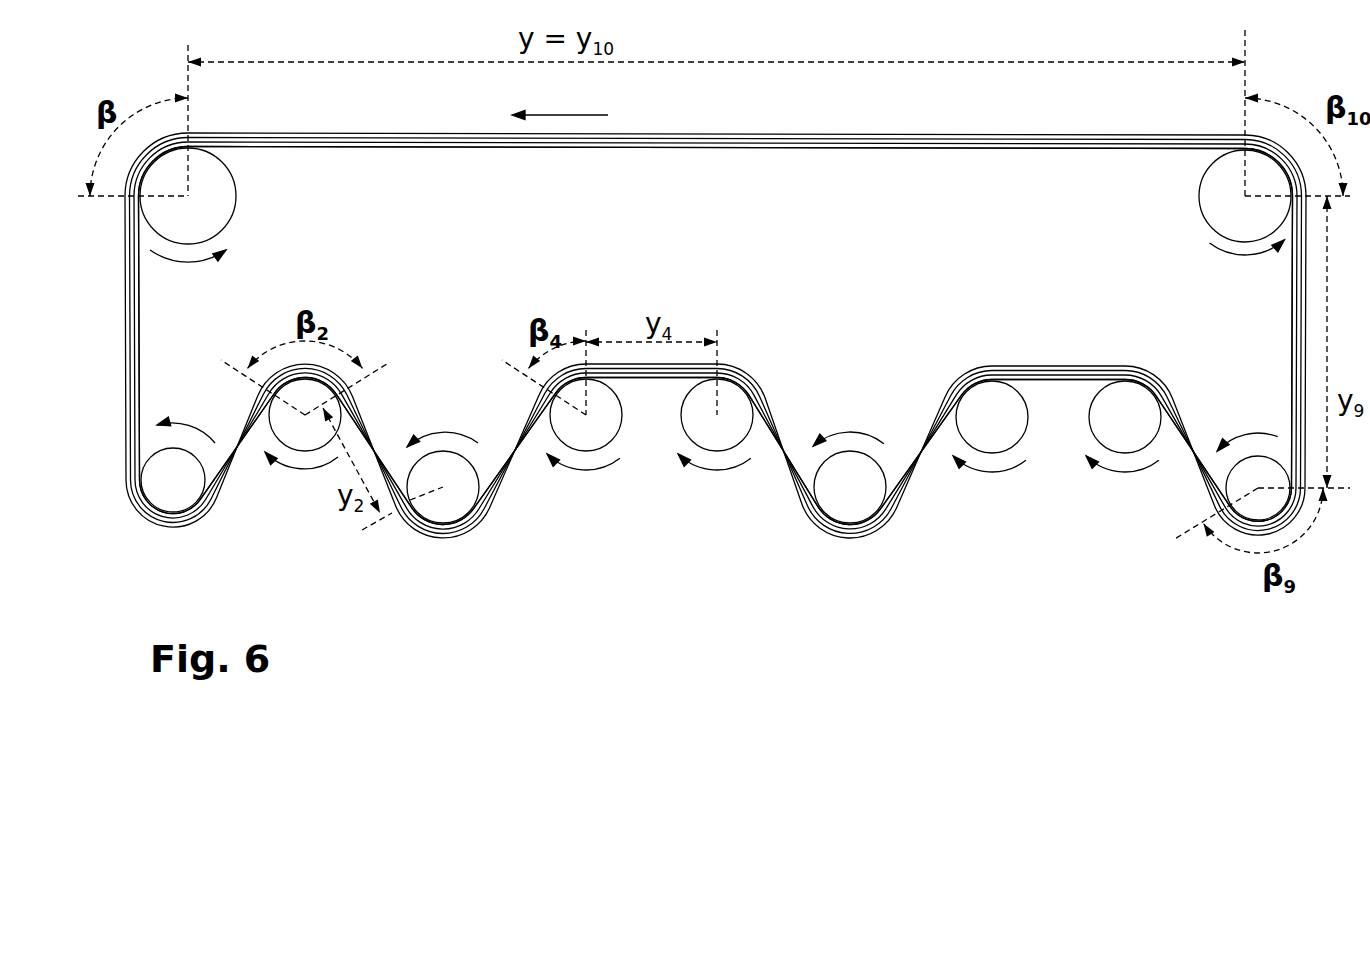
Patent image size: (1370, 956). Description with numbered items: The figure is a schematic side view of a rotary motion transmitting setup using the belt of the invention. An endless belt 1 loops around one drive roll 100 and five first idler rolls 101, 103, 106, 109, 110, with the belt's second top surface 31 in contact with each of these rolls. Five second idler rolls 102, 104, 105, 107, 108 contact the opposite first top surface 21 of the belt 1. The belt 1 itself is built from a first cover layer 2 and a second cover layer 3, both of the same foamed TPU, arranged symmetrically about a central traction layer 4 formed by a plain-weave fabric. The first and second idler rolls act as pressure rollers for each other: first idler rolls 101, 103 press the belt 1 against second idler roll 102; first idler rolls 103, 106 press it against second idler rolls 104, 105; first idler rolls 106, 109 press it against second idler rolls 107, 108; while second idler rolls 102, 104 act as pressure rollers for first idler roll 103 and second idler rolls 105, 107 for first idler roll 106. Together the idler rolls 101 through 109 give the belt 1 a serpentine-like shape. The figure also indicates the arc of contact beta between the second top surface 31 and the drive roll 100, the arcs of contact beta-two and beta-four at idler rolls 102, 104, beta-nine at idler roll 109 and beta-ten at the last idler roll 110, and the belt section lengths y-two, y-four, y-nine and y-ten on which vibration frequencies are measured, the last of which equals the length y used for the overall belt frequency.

The endless belt 1 is at (715, 308).
The first cover layer 2 is at (703, 141).
The second cover layer 3 is at (820, 148).
The central traction layer 4 is at (757, 144).
The first top surface 21 is at (1019, 132).
The second top surface 31 is at (1066, 165).
The drive roll 100 is at (214, 199).
The first idler roll 101 is at (182, 480).
The second idler roll 102 is at (292, 426).
The first idler roll 103 is at (443, 505).
The second idler roll 104 is at (560, 425).
The second idler roll 105 is at (720, 425).
The first idler roll 106 is at (857, 503).
The second idler roll 107 is at (992, 400).
The second idler roll 108 is at (1125, 400).
The first idler roll 109 is at (1237, 488).
The first idler roll 110 is at (1226, 207).